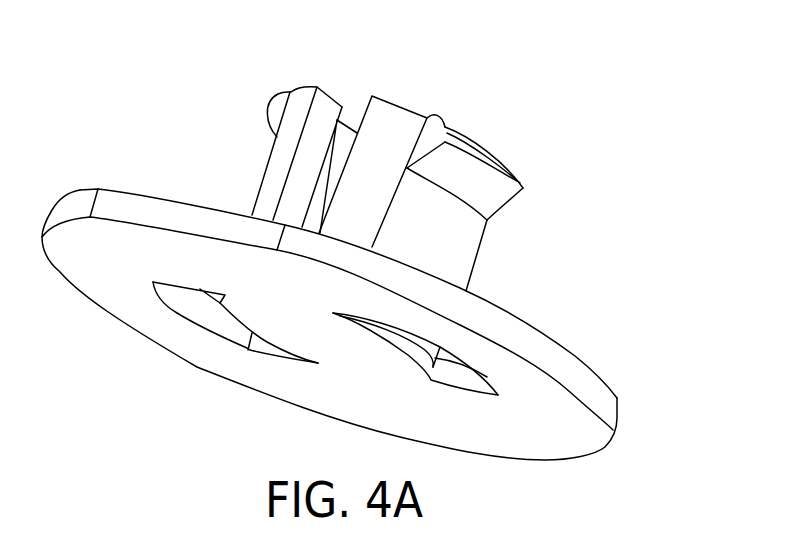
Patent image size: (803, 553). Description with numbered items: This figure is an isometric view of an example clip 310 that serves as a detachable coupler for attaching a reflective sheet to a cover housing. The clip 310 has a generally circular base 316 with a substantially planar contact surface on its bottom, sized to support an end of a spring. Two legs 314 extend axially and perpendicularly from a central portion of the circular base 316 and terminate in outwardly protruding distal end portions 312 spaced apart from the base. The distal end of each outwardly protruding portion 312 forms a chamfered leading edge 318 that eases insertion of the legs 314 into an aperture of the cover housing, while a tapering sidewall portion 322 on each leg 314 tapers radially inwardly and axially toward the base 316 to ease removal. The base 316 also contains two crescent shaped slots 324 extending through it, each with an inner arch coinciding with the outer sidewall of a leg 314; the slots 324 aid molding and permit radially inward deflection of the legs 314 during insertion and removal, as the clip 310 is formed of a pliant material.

The clip 310 is at (257, 25).
The outwardly protruding distal end portion 312 is at (277, 137).
The leg 314 is at (259, 188).
The circular base 316 is at (620, 417).
The chamfered leading edge 318 is at (277, 93).
The tapering sidewall portion 322 is at (272, 132).
The slot 324 is at (184, 296).